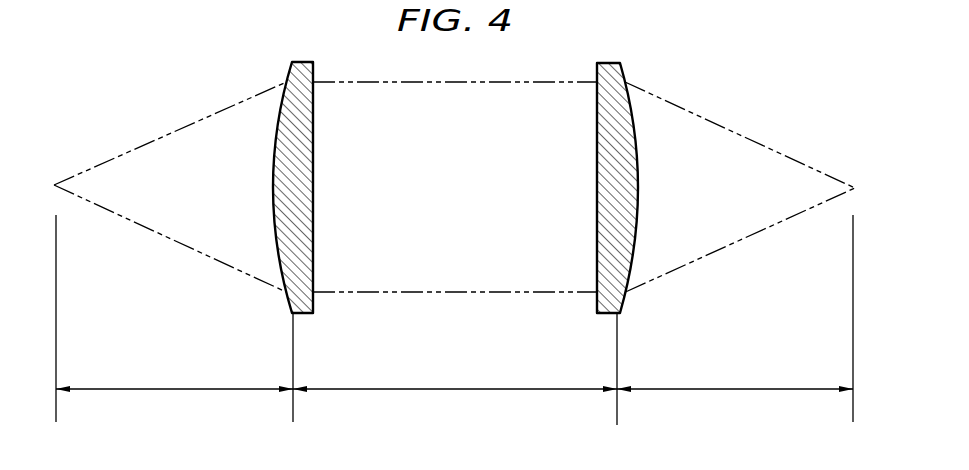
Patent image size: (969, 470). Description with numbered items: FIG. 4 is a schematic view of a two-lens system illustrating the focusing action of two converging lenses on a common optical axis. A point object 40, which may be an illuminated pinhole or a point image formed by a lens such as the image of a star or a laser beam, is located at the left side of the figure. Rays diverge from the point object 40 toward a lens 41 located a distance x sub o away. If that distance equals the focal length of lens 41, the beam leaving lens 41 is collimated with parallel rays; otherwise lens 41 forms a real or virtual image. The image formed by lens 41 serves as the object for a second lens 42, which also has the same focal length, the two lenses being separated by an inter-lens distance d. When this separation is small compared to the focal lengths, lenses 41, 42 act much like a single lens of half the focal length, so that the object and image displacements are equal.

The point object 40 is at (55, 174).
The lens 41 is at (293, 66).
The lens 42 is at (621, 76).